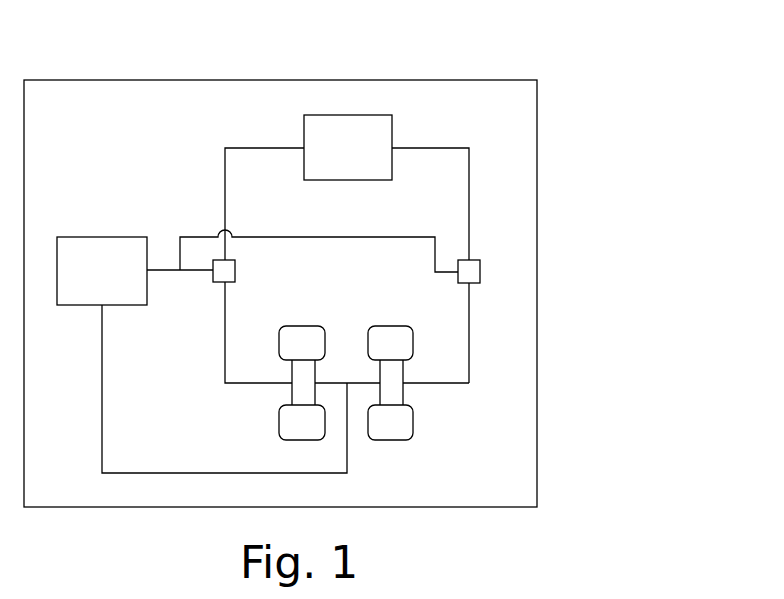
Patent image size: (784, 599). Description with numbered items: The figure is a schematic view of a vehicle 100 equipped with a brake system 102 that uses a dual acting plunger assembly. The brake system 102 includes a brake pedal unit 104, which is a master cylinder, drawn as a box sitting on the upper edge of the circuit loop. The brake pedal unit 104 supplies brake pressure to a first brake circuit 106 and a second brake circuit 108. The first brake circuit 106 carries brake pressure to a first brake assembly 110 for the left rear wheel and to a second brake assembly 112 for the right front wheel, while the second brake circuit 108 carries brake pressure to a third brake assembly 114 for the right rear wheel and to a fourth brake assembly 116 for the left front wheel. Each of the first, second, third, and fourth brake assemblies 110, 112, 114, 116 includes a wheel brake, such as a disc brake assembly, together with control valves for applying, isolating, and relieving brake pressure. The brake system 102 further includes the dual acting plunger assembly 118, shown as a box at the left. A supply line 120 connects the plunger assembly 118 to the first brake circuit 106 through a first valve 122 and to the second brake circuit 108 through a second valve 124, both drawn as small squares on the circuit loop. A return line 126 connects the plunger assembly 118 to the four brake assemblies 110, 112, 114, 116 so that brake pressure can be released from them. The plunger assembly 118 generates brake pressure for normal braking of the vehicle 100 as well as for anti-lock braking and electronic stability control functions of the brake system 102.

The vehicle 100 is at (537, 202).
The brake system 102 is at (156, 180).
The brake pedal unit 104 is at (345, 180).
The first brake circuit 106 is at (265, 148).
The second brake circuit 108 is at (430, 148).
The first brake assembly 110 is at (293, 326).
The second brake assembly 112 is at (279, 420).
The third brake assembly 114 is at (392, 326).
The fourth brake assembly 116 is at (413, 420).
The dual acting plunger assembly 118 is at (79, 222).
The supply line 120 is at (303, 237).
The first valve 122 is at (237, 273).
The second valve 124 is at (483, 274).
The return line 126 is at (132, 473).